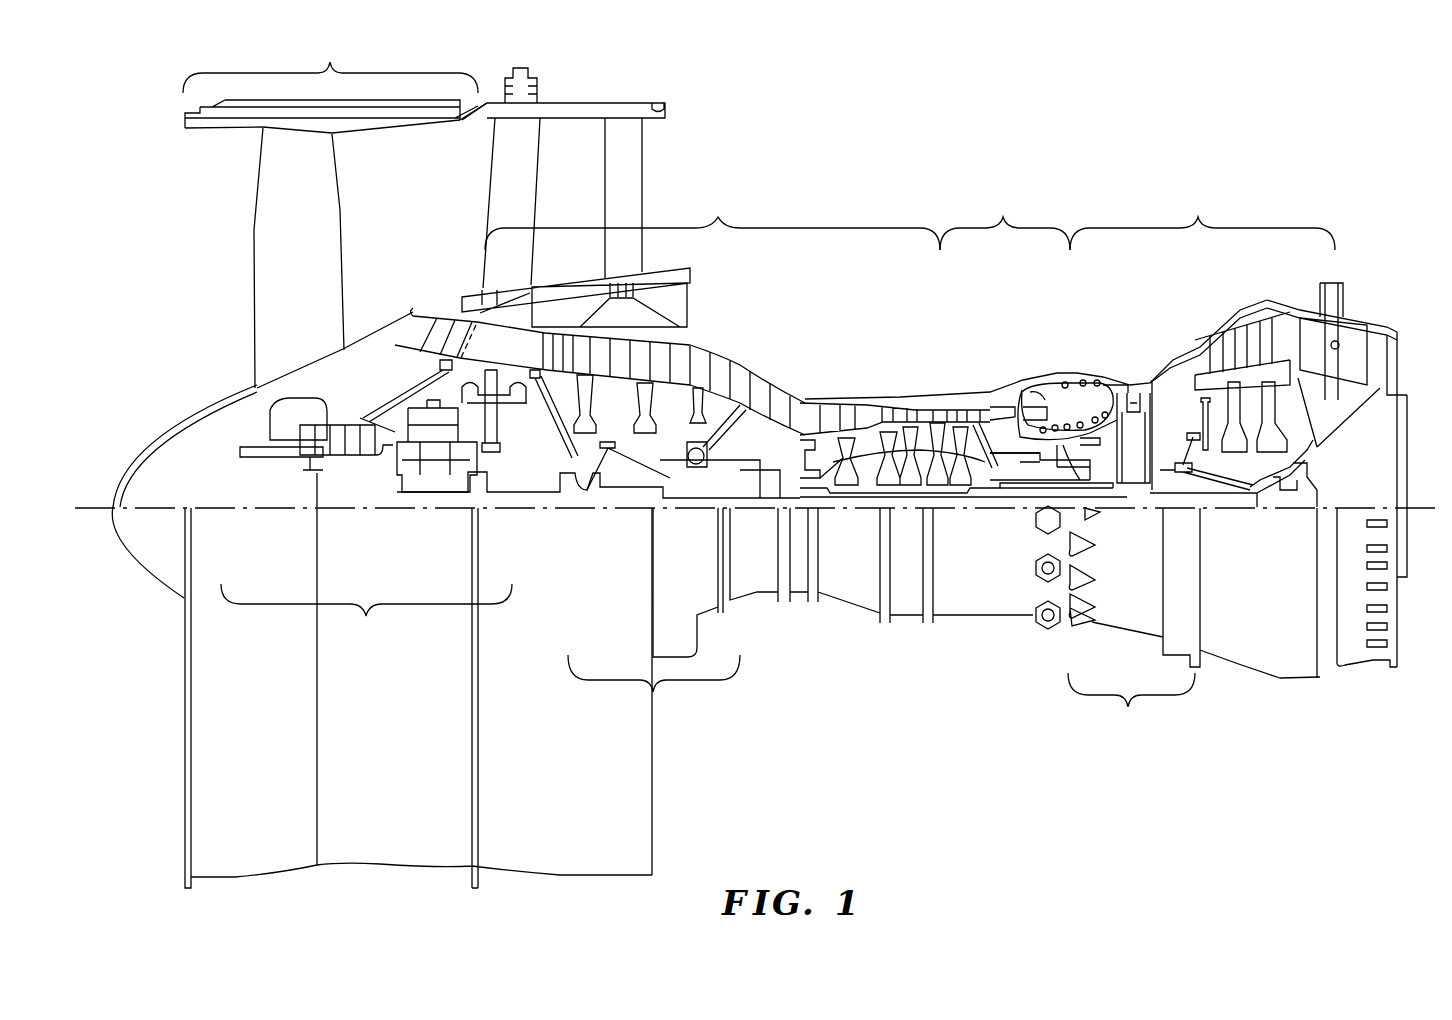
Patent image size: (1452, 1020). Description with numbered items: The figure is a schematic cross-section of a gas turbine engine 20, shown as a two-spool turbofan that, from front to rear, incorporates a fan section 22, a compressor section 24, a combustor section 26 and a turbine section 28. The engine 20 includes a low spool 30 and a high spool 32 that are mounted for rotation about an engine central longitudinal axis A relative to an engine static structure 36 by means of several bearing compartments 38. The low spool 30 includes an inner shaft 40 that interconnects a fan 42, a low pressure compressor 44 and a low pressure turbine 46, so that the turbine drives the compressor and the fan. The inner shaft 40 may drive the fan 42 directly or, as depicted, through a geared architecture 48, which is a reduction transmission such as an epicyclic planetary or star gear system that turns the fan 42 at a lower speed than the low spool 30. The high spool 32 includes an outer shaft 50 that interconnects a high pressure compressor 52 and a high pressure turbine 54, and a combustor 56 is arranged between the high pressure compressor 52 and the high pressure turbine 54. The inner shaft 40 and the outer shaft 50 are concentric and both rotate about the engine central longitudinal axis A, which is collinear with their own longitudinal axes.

The gas turbine engine 20 is at (1122, 158).
The fan section 22 is at (424, 84).
The compressor section 24 is at (667, 310).
The combustor section 26 is at (1103, 284).
The turbine section 28 is at (1238, 426).
The low spool 30 is at (760, 457).
The high spool 32 is at (980, 428).
The engine static structure 36 is at (903, 612).
The bearing compartments 38 is at (791, 698).
The inner shaft 40 is at (1100, 493).
The fan 42 is at (313, 313).
The low pressure compressor 44 is at (668, 352).
The low pressure turbine 46 is at (1243, 340).
The geared architecture 48 is at (430, 457).
The outer shaft 50 is at (1090, 467).
The high pressure compressor 52 is at (900, 458).
The high pressure turbine 54 is at (1137, 396).
The combustor 56 is at (1070, 410).
The engine central longitudinal axis A is at (1427, 507).